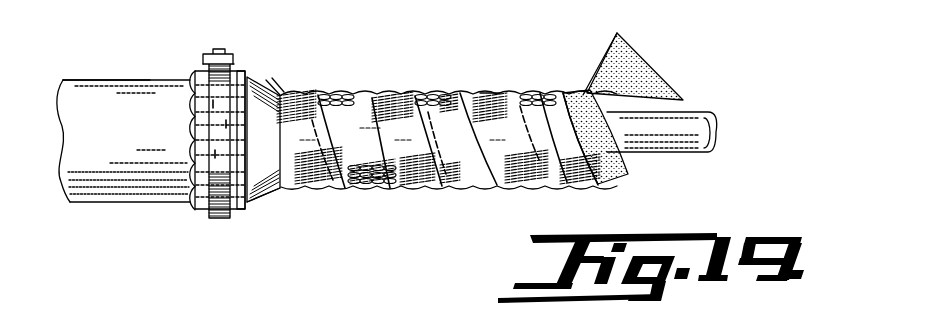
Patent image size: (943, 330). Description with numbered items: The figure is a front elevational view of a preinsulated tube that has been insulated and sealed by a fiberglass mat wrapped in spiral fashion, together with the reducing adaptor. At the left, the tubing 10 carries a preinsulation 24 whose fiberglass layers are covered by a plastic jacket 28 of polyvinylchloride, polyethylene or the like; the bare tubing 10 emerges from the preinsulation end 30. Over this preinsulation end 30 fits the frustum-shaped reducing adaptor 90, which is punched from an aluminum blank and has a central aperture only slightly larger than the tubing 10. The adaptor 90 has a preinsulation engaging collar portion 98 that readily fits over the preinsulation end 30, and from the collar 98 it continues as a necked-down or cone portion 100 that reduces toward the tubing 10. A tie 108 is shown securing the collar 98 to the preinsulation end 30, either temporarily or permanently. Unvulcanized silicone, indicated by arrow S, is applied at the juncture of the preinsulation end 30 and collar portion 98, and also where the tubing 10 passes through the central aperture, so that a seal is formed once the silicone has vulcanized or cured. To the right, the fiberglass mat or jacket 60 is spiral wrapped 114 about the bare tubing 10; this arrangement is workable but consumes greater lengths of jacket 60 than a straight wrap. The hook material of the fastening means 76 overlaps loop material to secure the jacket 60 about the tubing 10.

The tubing 10 is at (680, 148).
The preinsulation 24 is at (92, 80).
The plastic jacket 28 is at (143, 78).
The preinsulation end 30 is at (190, 204).
The fiberglass mat or jacket 60 is at (538, 92).
The fastening means 76 is at (402, 96).
The frustum-shaped reducing adaptor 90 is at (266, 200).
The collar portion 98 is at (246, 212).
The cone portion 100 is at (259, 78).
The tie 108 is at (216, 50).
The spiral wrapped 114 is at (486, 84).
The unvulcanized silicone S is at (268, 78).